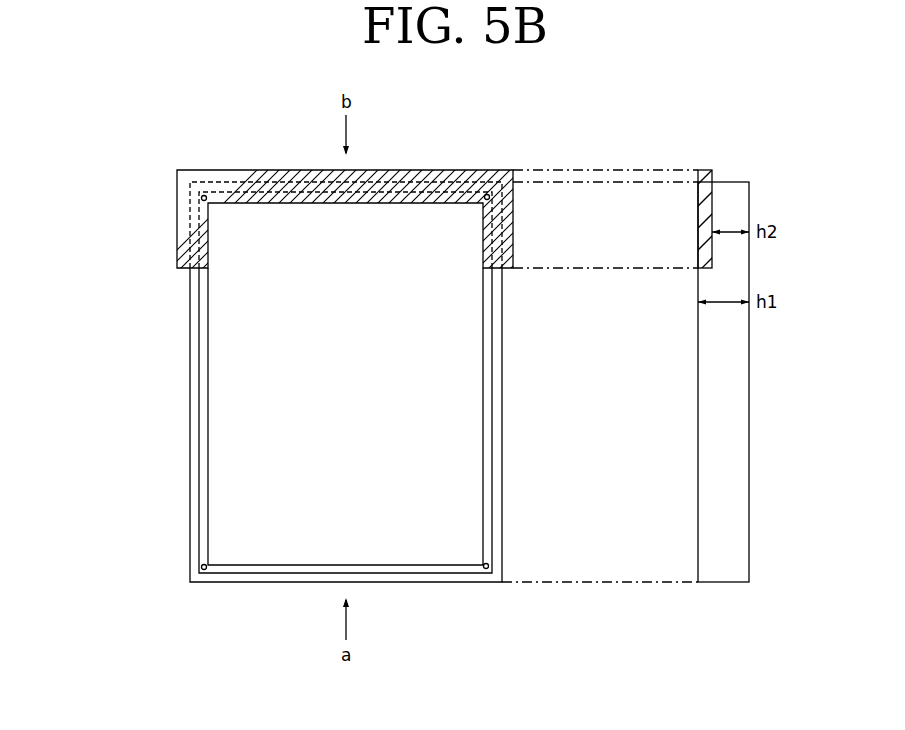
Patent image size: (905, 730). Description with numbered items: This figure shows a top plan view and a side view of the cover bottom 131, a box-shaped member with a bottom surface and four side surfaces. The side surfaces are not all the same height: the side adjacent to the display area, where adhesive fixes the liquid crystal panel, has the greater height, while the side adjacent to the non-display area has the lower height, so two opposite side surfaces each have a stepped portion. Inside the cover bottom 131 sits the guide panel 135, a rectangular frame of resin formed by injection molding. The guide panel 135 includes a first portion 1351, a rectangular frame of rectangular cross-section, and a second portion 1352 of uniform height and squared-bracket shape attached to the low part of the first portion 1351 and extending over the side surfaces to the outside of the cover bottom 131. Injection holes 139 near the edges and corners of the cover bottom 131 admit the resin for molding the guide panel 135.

The cover bottom 131 is at (712, 479).
The guide panel 135 is at (700, 170).
The second portion 1352 is at (183, 245).
The first portion 1351 is at (203, 288).
The injection holes 139 is at (487, 569).